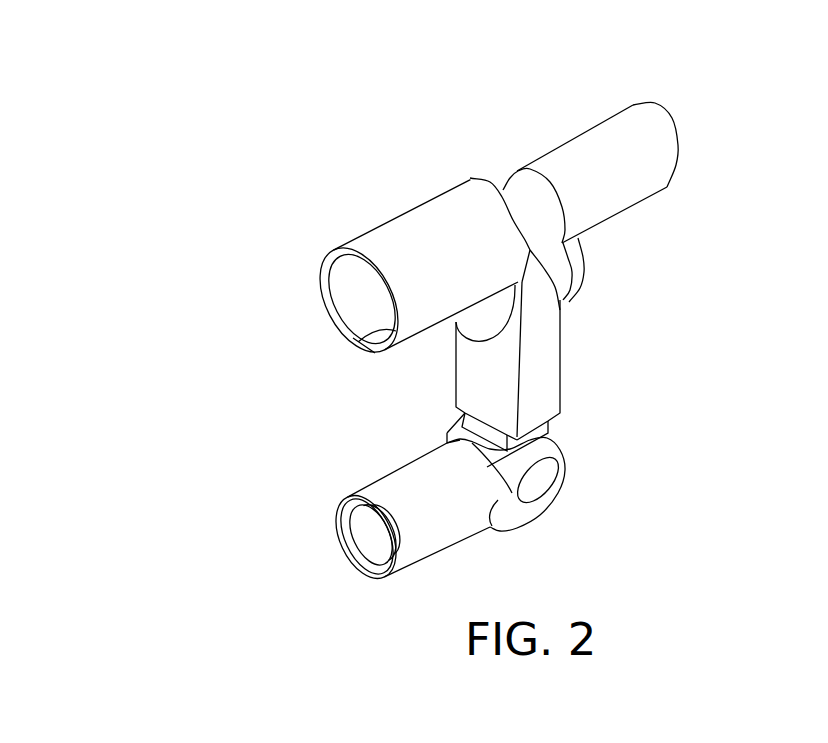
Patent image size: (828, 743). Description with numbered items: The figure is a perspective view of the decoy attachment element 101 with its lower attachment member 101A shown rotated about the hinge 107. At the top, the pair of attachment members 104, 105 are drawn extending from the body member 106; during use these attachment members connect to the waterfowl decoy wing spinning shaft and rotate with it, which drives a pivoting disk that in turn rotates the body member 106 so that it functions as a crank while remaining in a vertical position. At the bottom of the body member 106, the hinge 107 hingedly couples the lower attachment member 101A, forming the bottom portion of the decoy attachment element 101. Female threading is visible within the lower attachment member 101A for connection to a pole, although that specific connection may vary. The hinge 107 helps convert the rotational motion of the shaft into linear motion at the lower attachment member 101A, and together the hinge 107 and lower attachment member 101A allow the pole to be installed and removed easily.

The decoy attachment element 101 is at (146, 188).
The lower attachment member 101A is at (357, 485).
The attachment member 104 is at (567, 138).
The attachment member 105 is at (407, 210).
The body member 106 is at (560, 367).
The hinge 107 is at (560, 483).